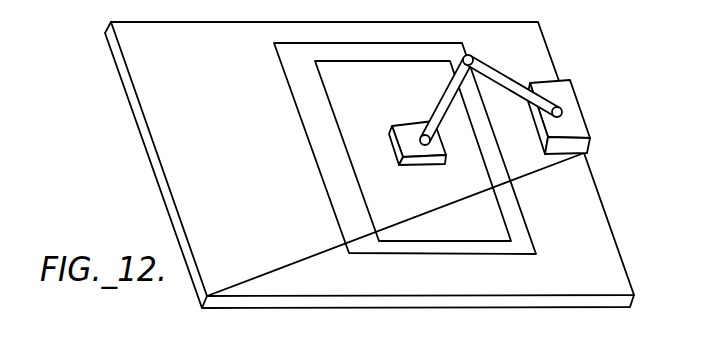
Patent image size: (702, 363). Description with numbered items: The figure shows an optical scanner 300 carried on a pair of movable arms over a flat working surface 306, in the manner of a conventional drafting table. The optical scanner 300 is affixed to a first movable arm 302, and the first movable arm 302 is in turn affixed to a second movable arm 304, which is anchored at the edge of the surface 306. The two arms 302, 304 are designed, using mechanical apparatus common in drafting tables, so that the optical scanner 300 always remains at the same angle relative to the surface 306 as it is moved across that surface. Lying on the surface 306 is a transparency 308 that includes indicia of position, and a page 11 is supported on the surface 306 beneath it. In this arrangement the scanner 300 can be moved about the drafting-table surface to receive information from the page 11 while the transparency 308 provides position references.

The surface 306 is at (170, 138).
The page 11 is at (335, 167).
The transparency 308 is at (384, 204).
The optical scanner 300 is at (413, 147).
The first movable arm 302 is at (441, 97).
The second movable arm 304 is at (485, 58).